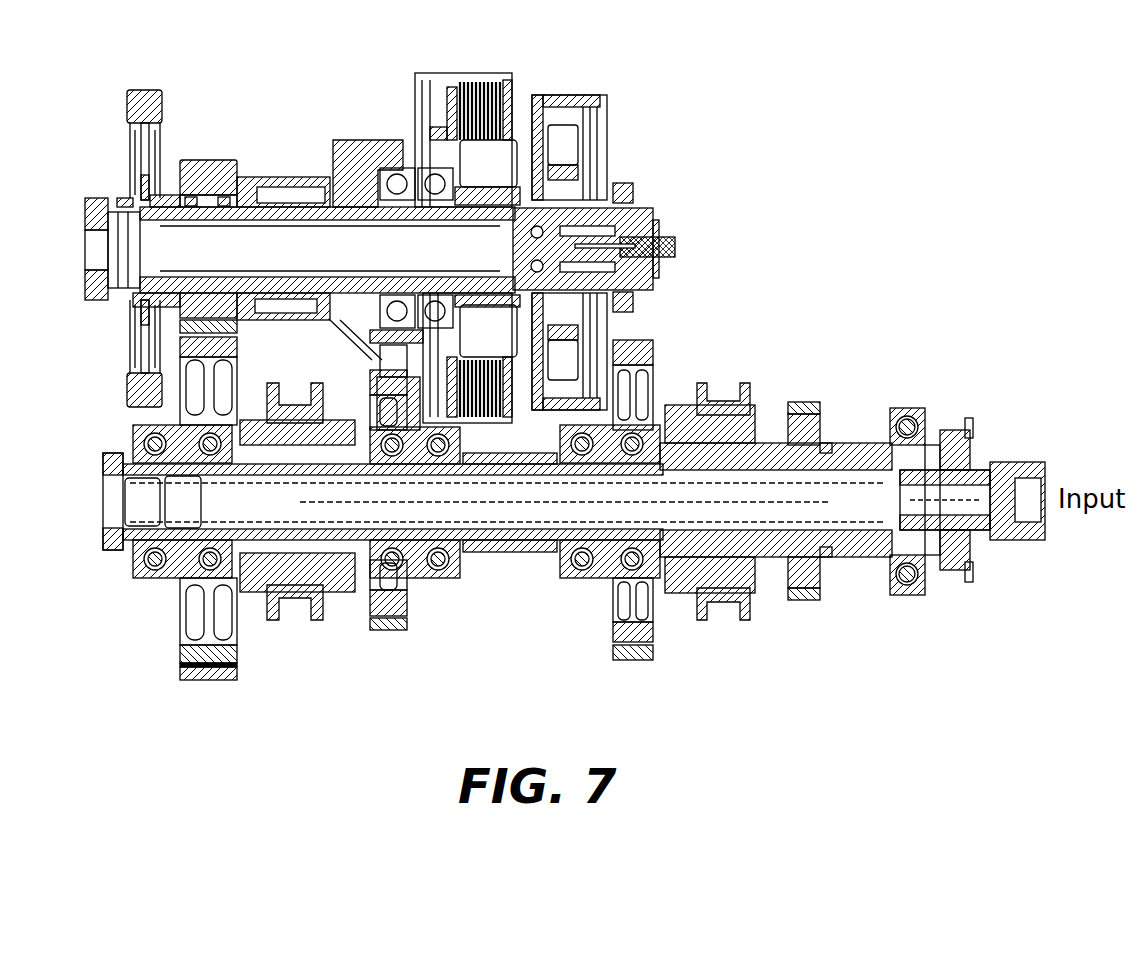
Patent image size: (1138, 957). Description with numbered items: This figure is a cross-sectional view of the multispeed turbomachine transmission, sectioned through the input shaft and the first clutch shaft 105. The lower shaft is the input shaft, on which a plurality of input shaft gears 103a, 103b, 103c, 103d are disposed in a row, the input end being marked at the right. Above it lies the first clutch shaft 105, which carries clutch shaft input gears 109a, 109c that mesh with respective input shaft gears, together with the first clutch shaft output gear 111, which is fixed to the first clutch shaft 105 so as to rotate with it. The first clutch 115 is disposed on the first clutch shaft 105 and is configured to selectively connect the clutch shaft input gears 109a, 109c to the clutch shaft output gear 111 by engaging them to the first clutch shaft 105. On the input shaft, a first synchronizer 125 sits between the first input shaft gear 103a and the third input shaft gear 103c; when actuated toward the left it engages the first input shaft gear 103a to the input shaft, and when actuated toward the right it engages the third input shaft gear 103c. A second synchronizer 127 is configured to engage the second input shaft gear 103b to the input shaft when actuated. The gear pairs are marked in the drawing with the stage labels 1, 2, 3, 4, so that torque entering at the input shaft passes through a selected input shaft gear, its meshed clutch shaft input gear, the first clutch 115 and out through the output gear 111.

The first clutch shaft 105 is at (352, 263).
The first clutch shaft output gear 111 is at (128, 118).
The clutch shaft input gear 109a is at (268, 138).
The clutch shaft input gear 109c is at (372, 122).
The first clutch 115 is at (522, 80).
The first input shaft gear 103a is at (187, 637).
The second input shaft gear 103b is at (617, 630).
The third input shaft gear 103c is at (403, 607).
The input shaft gear 103d is at (820, 586).
The first synchronizer 125 is at (296, 624).
The second synchronizer 127 is at (726, 622).
The first gear stage 1 is at (185, 414).
The second gear stage 2 is at (610, 564).
The third gear stage 3 is at (415, 366).
The fourth gear stage 4 is at (815, 542).